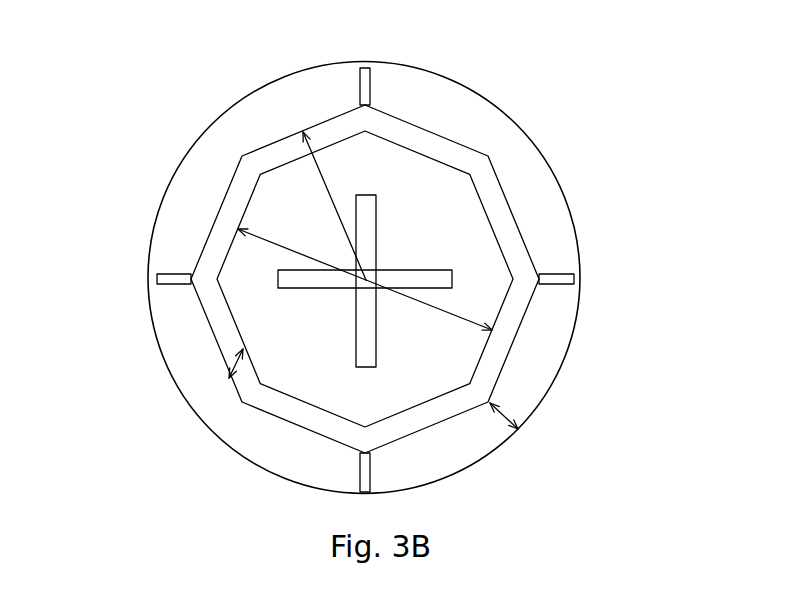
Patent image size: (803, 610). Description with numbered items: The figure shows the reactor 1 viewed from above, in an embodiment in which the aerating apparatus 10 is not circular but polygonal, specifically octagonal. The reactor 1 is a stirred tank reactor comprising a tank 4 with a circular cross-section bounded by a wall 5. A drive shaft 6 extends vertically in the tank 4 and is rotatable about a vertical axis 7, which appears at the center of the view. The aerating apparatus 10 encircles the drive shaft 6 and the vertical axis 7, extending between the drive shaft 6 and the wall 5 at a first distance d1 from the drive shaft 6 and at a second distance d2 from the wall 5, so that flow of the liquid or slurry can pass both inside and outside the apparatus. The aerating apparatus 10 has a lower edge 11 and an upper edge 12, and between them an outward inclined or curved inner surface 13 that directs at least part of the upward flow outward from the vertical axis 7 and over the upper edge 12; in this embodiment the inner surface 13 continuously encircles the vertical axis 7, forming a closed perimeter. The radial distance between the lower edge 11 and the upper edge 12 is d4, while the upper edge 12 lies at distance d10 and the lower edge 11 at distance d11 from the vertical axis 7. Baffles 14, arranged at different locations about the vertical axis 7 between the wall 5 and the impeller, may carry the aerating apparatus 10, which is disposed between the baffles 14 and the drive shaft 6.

The reactor 1 is at (128, 128).
The tank 4 is at (268, 84).
The wall 5 is at (157, 205).
The drive shaft 6 is at (445, 216).
The vertical axis 7 is at (366, 279).
The aerating apparatus 10 is at (368, 279).
The lower edge 11 is at (236, 358).
The upper edge 12 is at (227, 356).
The inner surface 13 is at (253, 378).
The baffles 14 is at (367, 70).
The distance of upper edge from vertical axis d10 is at (337, 206).
The distance of lower edge from vertical axis d11 is at (302, 245).
The first distance d1 is at (429, 324).
The radial distance between lower edge and upper edge d4 is at (226, 379).
The second distance d2 is at (505, 415).